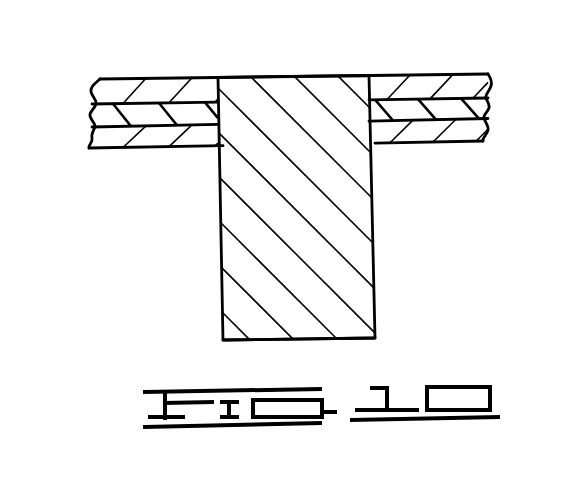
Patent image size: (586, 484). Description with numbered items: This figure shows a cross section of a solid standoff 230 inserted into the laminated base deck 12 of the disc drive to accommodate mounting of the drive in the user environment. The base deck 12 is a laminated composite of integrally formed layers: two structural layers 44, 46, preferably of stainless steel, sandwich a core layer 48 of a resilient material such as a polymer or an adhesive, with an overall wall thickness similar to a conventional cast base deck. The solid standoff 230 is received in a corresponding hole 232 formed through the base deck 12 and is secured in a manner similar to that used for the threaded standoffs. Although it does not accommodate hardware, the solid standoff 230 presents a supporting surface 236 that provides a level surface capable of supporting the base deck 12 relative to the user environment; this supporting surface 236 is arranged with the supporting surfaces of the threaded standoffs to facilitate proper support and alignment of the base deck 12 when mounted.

The laminated base deck 12 is at (466, 50).
The structural layer 44 is at (455, 140).
The structural layer 46 is at (475, 83).
The core layer 48 is at (458, 110).
The solid standoff 230 is at (218, 237).
The hole 232 is at (368, 111).
The supporting surface 236 is at (324, 340).